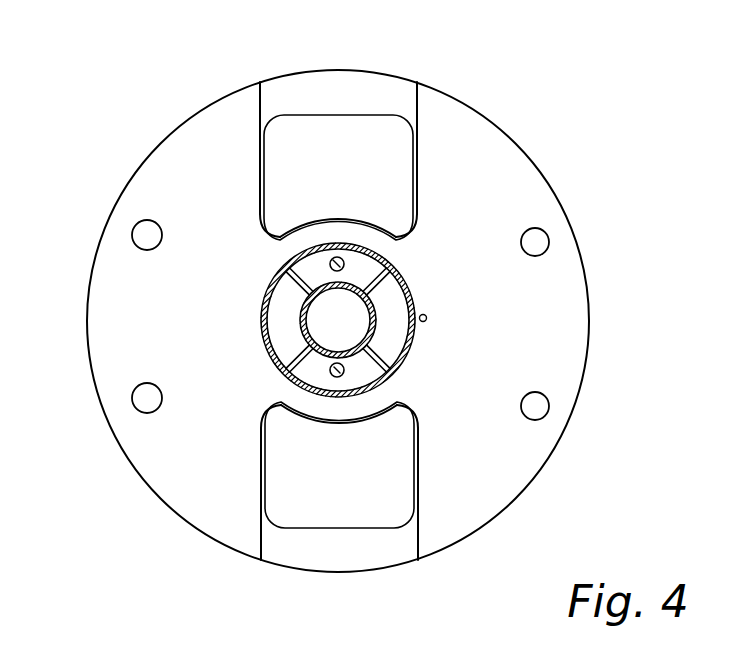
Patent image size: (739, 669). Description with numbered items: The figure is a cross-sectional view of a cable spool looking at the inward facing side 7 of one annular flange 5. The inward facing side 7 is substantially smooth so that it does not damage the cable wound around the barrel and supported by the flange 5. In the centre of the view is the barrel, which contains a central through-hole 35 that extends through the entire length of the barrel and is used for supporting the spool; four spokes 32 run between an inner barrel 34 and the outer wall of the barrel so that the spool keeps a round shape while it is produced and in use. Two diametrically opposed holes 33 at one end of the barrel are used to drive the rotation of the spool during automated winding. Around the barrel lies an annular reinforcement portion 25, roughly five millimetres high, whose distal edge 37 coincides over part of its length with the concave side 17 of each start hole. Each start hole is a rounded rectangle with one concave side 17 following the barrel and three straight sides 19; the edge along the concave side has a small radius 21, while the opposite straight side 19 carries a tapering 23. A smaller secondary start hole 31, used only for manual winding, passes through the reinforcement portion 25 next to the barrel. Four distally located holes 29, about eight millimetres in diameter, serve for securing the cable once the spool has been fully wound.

The annular flange 5 is at (598, 255).
The inward facing side 7 is at (512, 176).
The concave side 17 is at (336, 424).
The straight side 19 is at (261, 462).
The radius 21 is at (280, 236).
The tapering 23 is at (366, 90).
The annular reinforcement portion 25 is at (307, 240).
The distally located hole 29 is at (142, 238).
The secondary start hole 31 is at (427, 318).
The spoke 32 is at (370, 285).
The diametrically opposed hole 33 is at (344, 263).
The inner barrel 34 is at (300, 330).
The central through-hole 35 is at (333, 321).
The distal edge 37 is at (365, 220).